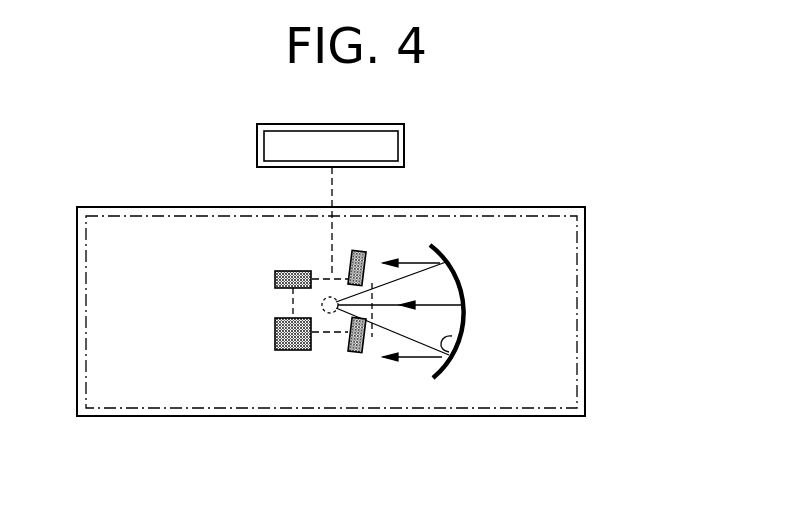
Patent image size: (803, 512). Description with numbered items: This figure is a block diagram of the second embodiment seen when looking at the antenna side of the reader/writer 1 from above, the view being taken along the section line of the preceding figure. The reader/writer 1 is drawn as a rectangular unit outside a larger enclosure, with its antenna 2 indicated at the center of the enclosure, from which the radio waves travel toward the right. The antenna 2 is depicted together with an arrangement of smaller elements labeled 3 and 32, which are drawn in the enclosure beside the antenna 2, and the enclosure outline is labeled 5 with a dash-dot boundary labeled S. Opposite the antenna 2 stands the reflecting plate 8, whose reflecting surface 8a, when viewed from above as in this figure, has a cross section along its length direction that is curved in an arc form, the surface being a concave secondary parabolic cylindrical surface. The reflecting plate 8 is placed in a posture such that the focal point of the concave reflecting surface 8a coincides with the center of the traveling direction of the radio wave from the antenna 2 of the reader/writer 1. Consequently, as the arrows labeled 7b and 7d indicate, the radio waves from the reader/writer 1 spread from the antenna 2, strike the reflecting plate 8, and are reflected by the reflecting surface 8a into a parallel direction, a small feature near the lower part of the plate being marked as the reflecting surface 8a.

The reader/writer 1 is at (404, 140).
The antenna 2 is at (327, 333).
The light source 3 is at (292, 352).
The light emitting elements 32 is at (360, 428).
The housing 5 is at (577, 290).
The light beam 7b is at (369, 281).
The light beam 7d is at (405, 263).
The reflecting plate 8 is at (458, 328).
The reflecting surface 8a is at (450, 350).
The original sheet S is at (575, 229).